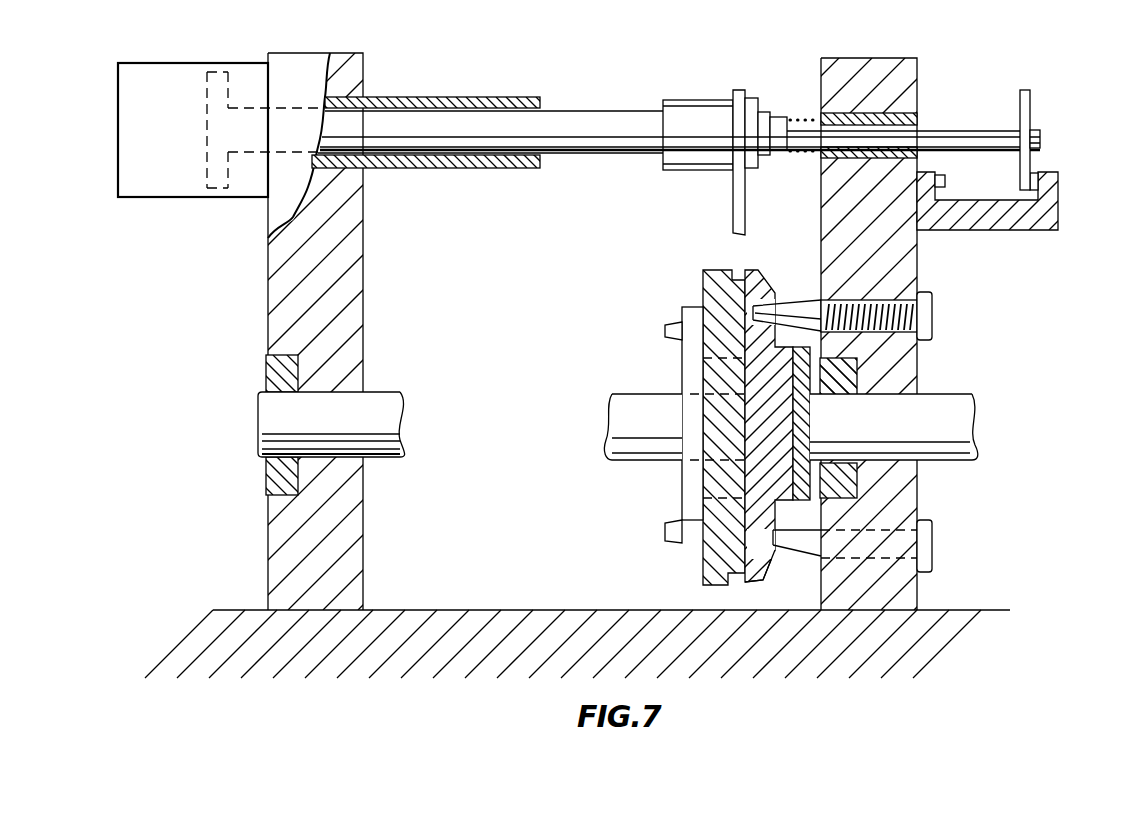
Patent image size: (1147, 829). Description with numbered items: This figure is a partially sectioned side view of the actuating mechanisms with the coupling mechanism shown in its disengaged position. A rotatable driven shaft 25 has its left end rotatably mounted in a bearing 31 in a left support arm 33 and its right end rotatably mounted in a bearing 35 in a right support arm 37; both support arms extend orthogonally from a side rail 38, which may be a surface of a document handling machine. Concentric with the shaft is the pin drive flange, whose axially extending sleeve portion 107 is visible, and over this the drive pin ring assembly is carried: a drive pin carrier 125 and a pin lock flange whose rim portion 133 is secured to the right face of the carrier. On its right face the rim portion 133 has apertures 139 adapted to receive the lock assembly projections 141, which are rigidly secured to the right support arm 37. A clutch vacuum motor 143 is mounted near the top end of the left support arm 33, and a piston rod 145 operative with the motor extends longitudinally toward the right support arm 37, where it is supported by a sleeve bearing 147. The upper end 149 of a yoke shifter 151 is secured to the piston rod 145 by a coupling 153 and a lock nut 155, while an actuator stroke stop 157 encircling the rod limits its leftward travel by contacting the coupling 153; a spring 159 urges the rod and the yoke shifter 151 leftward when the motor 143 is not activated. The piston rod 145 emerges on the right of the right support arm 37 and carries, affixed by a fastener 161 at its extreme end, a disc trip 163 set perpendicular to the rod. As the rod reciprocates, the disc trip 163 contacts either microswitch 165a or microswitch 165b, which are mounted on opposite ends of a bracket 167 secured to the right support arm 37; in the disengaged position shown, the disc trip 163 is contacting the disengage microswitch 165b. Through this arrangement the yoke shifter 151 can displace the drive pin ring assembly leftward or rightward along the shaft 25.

The rotatable driven shaft 25 is at (383, 392).
The bearing 31 is at (266, 368).
The left support arm 33 is at (266, 292).
The bearing 35 is at (846, 489).
The right support arm 37 is at (920, 357).
The side rail 38 is at (492, 610).
The sleeve portion 107 is at (820, 355).
The drive pin carrier 125 is at (703, 268).
The rim portion 133 is at (763, 578).
The apertures 139 is at (770, 292).
The lock assembly projections 141 is at (810, 300).
The clutch vacuum motor 143 is at (156, 52).
The piston rod 145 is at (585, 111).
The sleeve bearing 147 is at (920, 122).
The upper end 149 is at (738, 90).
The yoke shifter 151 is at (733, 213).
The coupling 153 is at (680, 100).
The lock nut 155 is at (752, 98).
The actuator stroke stop 157 is at (432, 97).
The spring 159 is at (798, 153).
The fastener 161 is at (1040, 135).
The disc trip 163 is at (1030, 90).
The microswitch 165a is at (945, 180).
The microswitch 165b is at (1040, 175).
The bracket 167 is at (1055, 218).